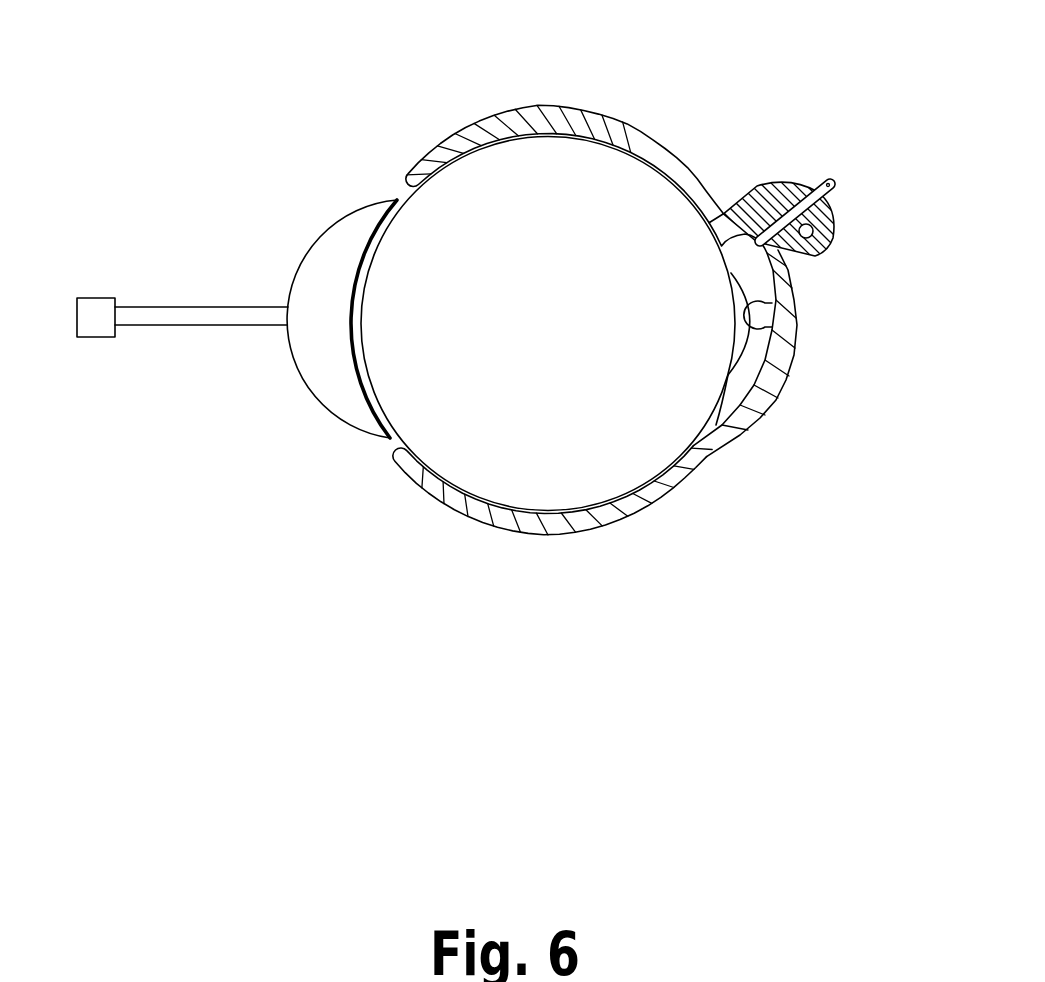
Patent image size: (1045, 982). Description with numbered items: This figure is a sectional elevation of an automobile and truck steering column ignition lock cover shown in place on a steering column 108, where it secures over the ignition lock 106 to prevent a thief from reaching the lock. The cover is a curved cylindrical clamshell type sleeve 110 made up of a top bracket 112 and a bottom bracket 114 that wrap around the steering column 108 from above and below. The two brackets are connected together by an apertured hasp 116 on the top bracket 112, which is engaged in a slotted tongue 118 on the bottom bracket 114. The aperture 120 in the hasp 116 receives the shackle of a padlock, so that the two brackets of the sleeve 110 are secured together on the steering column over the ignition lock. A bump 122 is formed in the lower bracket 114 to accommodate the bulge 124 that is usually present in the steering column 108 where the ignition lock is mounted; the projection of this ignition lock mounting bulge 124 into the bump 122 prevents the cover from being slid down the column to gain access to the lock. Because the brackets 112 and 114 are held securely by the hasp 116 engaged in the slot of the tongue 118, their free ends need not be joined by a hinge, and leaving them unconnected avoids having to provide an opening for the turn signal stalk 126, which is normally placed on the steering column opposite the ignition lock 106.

The ignition lock 106 is at (757, 318).
The steering column 108 is at (572, 344).
The sleeve 110 is at (730, 181).
The top bracket 112 is at (558, 120).
The bottom bracket 114 is at (563, 525).
The hasp 116 is at (830, 224).
The slotted tongue 118 is at (829, 187).
The aperture 120 is at (832, 243).
The bump 122 is at (746, 350).
The bulge 124 is at (746, 352).
The turn signal stalk 126 is at (218, 307).